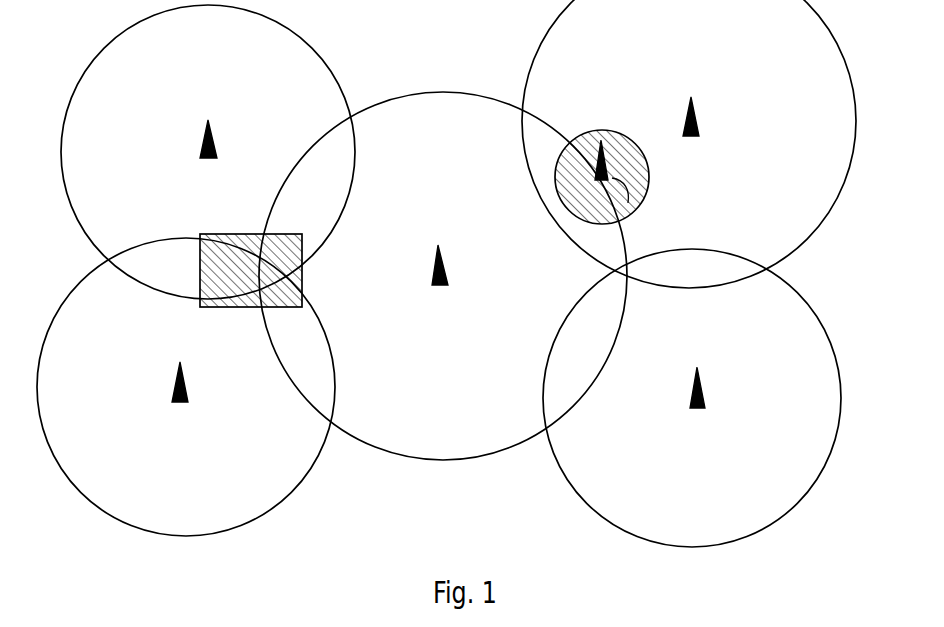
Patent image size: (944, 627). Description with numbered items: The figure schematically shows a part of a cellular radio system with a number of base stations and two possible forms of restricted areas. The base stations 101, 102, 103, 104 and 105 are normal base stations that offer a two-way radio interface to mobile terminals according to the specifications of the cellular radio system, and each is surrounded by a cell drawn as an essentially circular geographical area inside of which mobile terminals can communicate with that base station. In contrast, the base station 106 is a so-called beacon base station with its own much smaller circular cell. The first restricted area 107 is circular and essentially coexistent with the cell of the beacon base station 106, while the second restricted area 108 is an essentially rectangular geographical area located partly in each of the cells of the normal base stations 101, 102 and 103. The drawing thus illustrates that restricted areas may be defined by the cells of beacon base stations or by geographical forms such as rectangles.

The base station 101 is at (202, 142).
The base station 102 is at (176, 402).
The base station 103 is at (432, 281).
The base station 104 is at (698, 131).
The base station 105 is at (690, 406).
The beacon base station 106 is at (633, 207).
The first restricted area 107 is at (596, 137).
The second restricted area 108 is at (290, 293).